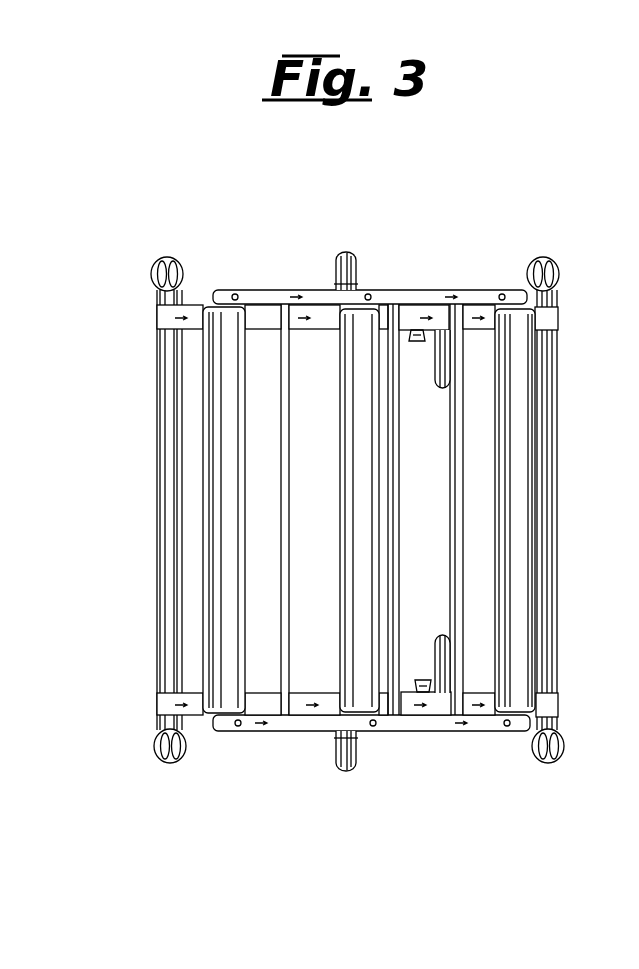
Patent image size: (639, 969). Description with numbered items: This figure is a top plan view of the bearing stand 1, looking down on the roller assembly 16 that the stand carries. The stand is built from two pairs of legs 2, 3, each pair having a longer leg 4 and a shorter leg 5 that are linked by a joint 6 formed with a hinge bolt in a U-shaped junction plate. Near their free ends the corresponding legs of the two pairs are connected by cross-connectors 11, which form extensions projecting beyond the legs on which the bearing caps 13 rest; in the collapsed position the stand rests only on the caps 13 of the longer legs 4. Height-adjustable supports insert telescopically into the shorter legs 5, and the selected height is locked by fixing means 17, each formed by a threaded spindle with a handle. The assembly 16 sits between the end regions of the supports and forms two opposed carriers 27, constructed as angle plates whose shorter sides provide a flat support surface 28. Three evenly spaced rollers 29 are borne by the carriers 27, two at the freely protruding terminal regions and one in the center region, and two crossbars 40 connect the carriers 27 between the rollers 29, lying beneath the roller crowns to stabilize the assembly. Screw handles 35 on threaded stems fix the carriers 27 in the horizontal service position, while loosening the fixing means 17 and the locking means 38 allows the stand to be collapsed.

The bearing stand 1 is at (361, 506).
The leg pair 2 is at (350, 812).
The leg pair 3 is at (262, 245).
The leg 4 is at (186, 318).
The leg 5 is at (545, 313).
The joint 6 is at (414, 310).
The cross-connector 11 is at (170, 583).
The bearing cap 13 is at (168, 257).
The assembly 16 is at (473, 276).
The fixing means 17 is at (432, 404).
The carrier 27 is at (282, 290).
The support surface 28 is at (450, 297).
The roller 29 is at (358, 375).
The screw handle 35 is at (344, 278).
The locking means 38 is at (344, 222).
The crossbar 40 is at (288, 700).